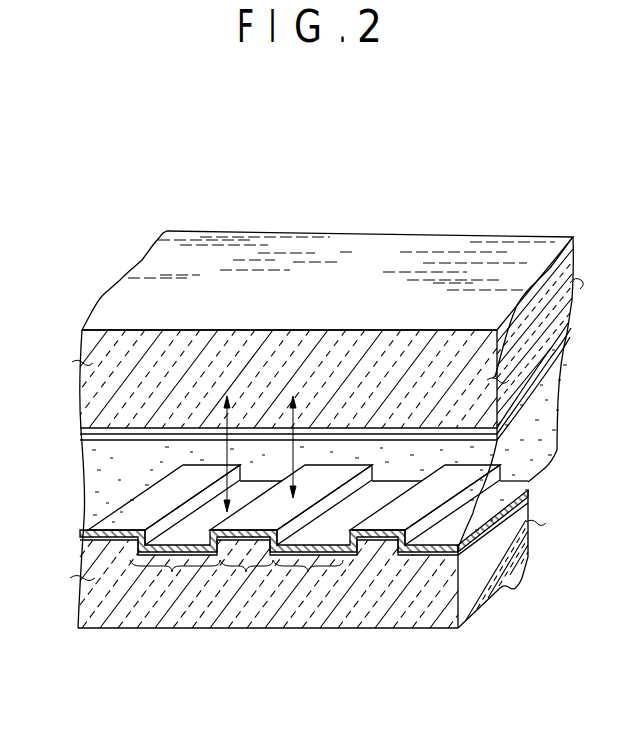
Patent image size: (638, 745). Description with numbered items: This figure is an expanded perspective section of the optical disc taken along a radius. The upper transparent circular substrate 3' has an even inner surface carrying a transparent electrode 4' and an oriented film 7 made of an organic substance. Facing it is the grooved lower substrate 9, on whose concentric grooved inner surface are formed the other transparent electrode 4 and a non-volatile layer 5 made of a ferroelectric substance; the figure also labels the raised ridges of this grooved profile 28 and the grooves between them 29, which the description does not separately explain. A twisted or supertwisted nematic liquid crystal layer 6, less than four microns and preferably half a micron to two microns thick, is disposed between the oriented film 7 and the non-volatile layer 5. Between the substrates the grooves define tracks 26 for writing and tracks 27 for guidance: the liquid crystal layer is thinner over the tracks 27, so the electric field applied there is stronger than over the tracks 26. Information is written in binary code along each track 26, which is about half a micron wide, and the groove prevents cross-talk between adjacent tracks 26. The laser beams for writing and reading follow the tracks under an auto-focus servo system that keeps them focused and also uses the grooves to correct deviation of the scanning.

The transparent circular substrate 3' is at (299, 429).
The transparent electrode 4' is at (294, 381).
The oriented film 7 is at (103, 448).
The liquid crystal layer 6 is at (90, 494).
The non-volatile layer 5 is at (88, 532).
The transparent electrode 4 is at (282, 534).
The grooved lower substrate 9 is at (83, 605).
The projecting stripes (ridges) 28 is at (300, 462).
The grooves between stripes 29 is at (240, 465).
The track for writing 26 is at (172, 572).
The track for guidance 27 is at (246, 572).